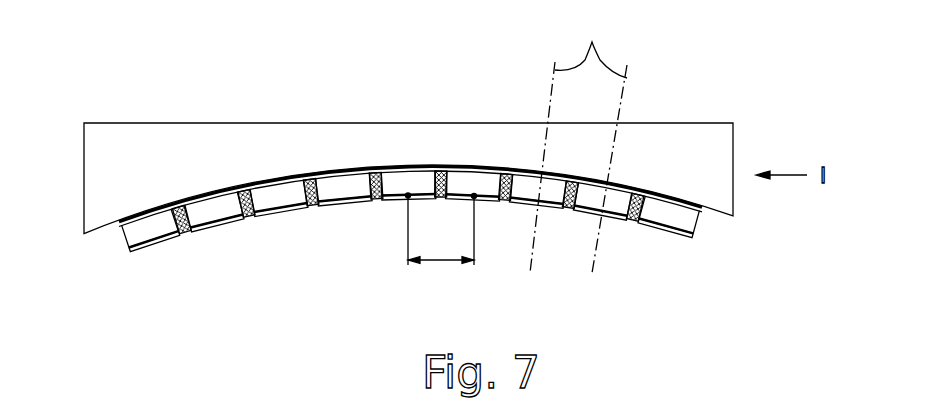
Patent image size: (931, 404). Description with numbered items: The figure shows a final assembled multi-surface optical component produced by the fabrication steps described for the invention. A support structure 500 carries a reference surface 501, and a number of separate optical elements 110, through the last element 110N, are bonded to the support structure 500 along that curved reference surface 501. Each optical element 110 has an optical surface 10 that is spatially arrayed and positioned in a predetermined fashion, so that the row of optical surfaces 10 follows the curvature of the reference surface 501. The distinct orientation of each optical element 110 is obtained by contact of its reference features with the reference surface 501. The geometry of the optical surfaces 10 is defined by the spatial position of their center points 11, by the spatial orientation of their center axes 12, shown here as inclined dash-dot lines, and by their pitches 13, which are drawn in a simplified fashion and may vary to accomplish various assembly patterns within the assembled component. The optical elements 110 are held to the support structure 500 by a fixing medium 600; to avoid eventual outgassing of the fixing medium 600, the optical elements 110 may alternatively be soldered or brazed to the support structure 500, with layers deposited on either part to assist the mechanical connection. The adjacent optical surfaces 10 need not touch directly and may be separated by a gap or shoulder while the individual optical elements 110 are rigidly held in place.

The optical surface 10 is at (158, 247).
The center point 11 is at (408, 195).
The center axis 12 is at (592, 42).
The pitch 13 is at (441, 231).
The optical element 110 is at (141, 233).
The optical element 110N is at (687, 217).
The support structure 500 is at (722, 138).
The reference surface 501 is at (267, 178).
The fixing medium 600 is at (628, 215).